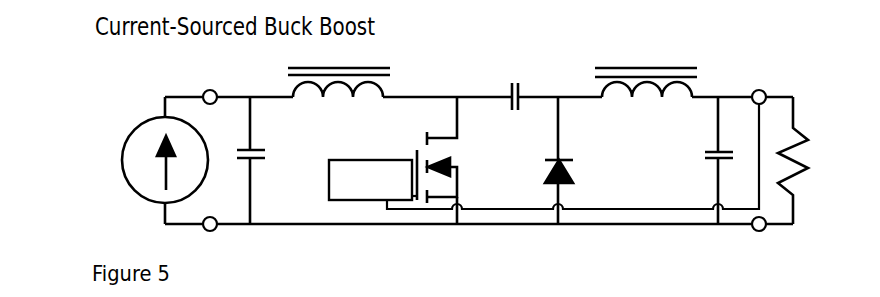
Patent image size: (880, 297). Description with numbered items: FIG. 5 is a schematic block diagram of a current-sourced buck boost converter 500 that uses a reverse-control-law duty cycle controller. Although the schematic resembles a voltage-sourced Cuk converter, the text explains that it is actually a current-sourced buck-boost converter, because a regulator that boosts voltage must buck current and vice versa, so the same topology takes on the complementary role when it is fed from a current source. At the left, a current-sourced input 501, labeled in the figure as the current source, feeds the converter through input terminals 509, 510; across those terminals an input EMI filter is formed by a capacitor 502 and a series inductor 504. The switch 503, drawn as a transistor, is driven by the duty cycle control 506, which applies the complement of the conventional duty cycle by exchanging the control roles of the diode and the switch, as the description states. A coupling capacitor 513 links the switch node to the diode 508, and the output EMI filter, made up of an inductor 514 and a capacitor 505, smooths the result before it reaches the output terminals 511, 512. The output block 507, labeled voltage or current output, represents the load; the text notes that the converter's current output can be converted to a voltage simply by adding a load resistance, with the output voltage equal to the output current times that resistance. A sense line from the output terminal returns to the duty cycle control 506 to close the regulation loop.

The current-sourced buck boost converter 500 is at (119, 100).
The current source input 501 is at (122, 147).
The input filter capacitor 502 is at (231, 163).
The switch transistor 503 is at (440, 136).
The input EMI filter inductor 504 is at (378, 53).
The output filter capacitor 505 is at (700, 163).
The duty cycle control 506 is at (419, 157).
The voltage or current output load 507 is at (808, 125).
The diode 508 is at (568, 196).
The input terminal 509 is at (215, 90).
The input terminal 510 is at (212, 232).
The output terminal 511 is at (764, 88).
The output terminal 512 is at (758, 233).
The coupling capacitor 513 is at (508, 80).
The output EMI filter inductor 514 is at (632, 68).